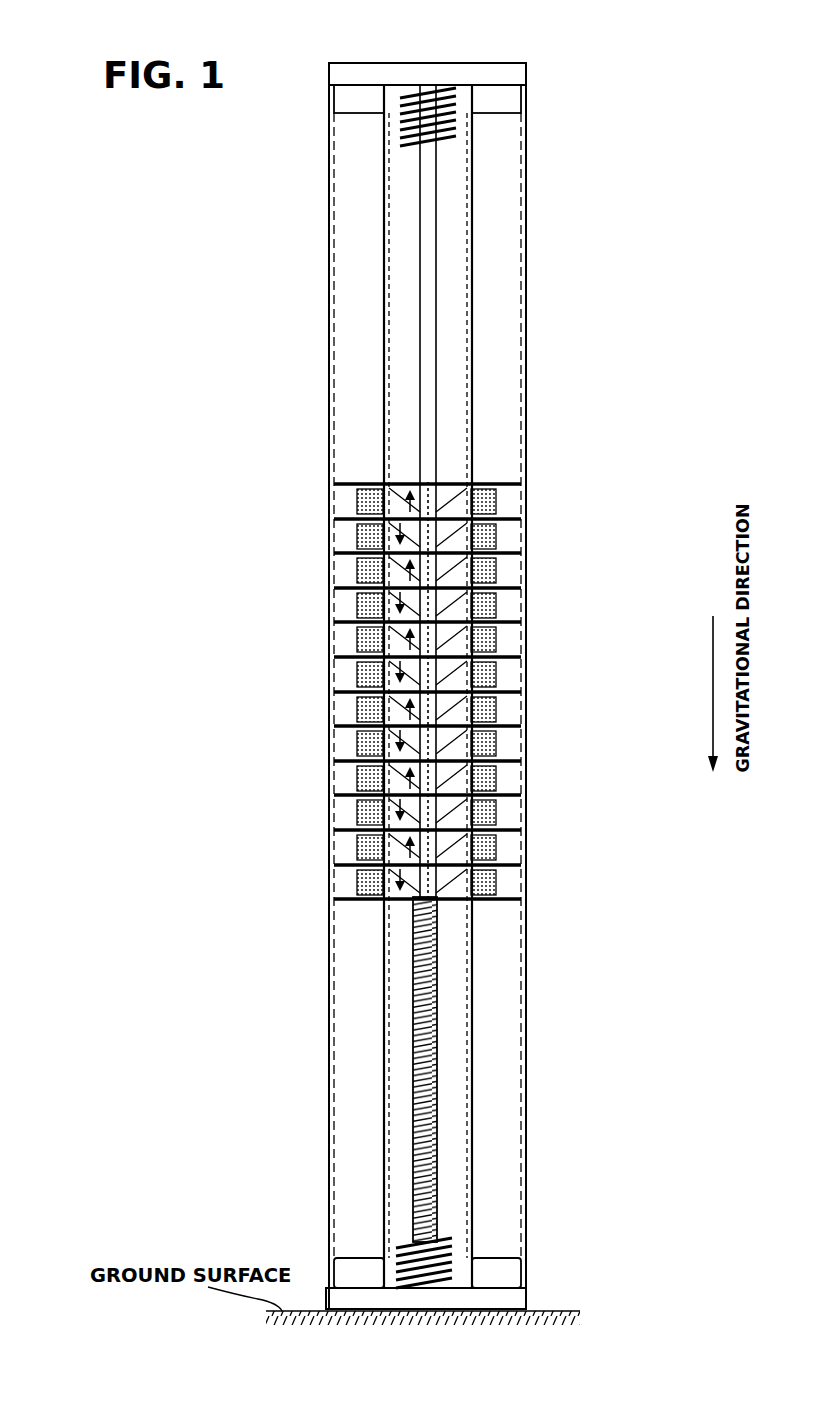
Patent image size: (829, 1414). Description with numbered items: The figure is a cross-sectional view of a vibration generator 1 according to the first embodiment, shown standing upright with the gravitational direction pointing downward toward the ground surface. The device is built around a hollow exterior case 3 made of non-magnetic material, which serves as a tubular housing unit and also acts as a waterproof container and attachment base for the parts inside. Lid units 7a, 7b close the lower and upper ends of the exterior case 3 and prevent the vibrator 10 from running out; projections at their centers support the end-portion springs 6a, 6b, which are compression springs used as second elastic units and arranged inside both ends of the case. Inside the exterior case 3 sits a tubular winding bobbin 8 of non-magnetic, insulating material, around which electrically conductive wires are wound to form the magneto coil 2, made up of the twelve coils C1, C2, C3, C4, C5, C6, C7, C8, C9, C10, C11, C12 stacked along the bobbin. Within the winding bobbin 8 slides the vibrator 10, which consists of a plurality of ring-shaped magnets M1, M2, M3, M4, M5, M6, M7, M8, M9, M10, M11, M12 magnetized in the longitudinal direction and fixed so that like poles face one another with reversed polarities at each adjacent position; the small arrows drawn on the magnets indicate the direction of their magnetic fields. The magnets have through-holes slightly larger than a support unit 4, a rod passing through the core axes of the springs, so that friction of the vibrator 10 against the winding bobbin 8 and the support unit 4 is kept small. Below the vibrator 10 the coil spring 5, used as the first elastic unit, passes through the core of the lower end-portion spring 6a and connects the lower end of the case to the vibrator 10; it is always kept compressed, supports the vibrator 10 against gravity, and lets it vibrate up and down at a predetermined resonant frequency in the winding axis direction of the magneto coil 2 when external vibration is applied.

The vibration generator 1 is at (681, 271).
The magneto coil 2 is at (302, 474).
The exterior case 3 is at (527, 366).
The support unit 4 is at (430, 305).
The coil spring 5 is at (435, 1005).
The end-portion spring 6a is at (440, 1235).
The end-portion spring 6b is at (440, 128).
The lid unit 7a is at (505, 1298).
The lid unit 7b is at (495, 79).
The winding bobbin 8 is at (470, 1085).
The vibrator 10 is at (465, 474).
The coil C1 is at (364, 498).
The coil C2 is at (364, 533).
The coil C3 is at (364, 567).
The coil C4 is at (364, 602).
The coil C5 is at (364, 636).
The coil C6 is at (364, 671).
The coil C7 is at (364, 705).
The coil C8 is at (364, 740).
The coil C9 is at (364, 774).
The coil C10 is at (364, 809).
The coil C11 is at (364, 843).
The coil C12 is at (364, 878).
The ring-shaped magnet M1 is at (455, 501).
The ring-shaped magnet M2 is at (455, 536).
The ring-shaped magnet M3 is at (455, 570).
The ring-shaped magnet M4 is at (455, 605).
The ring-shaped magnet M5 is at (455, 639).
The ring-shaped magnet M6 is at (455, 674).
The ring-shaped magnet M7 is at (455, 708).
The ring-shaped magnet M8 is at (455, 743).
The ring-shaped magnet M9 is at (455, 777).
The ring-shaped magnet M10 is at (455, 812).
The ring-shaped magnet M11 is at (455, 846).
The ring-shaped magnet M12 is at (455, 881).